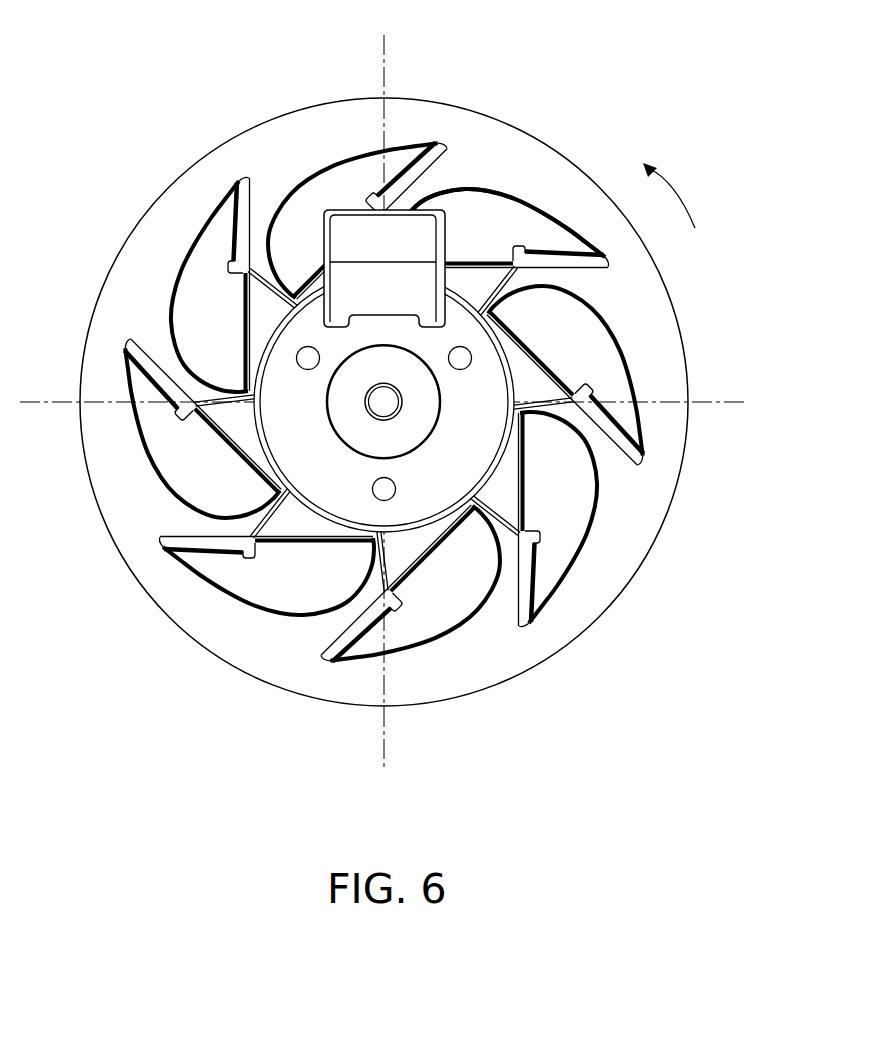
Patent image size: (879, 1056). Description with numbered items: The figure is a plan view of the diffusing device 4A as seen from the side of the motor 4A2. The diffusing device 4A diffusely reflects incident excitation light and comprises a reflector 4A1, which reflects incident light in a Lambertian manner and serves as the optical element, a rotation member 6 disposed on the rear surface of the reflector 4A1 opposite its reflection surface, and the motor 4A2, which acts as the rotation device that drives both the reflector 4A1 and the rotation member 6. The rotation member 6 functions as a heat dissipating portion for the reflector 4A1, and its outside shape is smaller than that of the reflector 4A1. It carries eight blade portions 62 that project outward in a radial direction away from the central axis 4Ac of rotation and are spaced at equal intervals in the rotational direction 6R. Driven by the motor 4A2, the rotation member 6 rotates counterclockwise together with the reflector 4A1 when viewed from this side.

The diffusing device 4A is at (415, 367).
The reflector 4A1 is at (647, 310).
The motor 4A2 is at (463, 422).
The central axis of rotation 4Ac is at (382, 403).
The rotation member 6 is at (501, 182).
The blade portion 62 is at (555, 228).
The rotational direction 6R is at (676, 195).